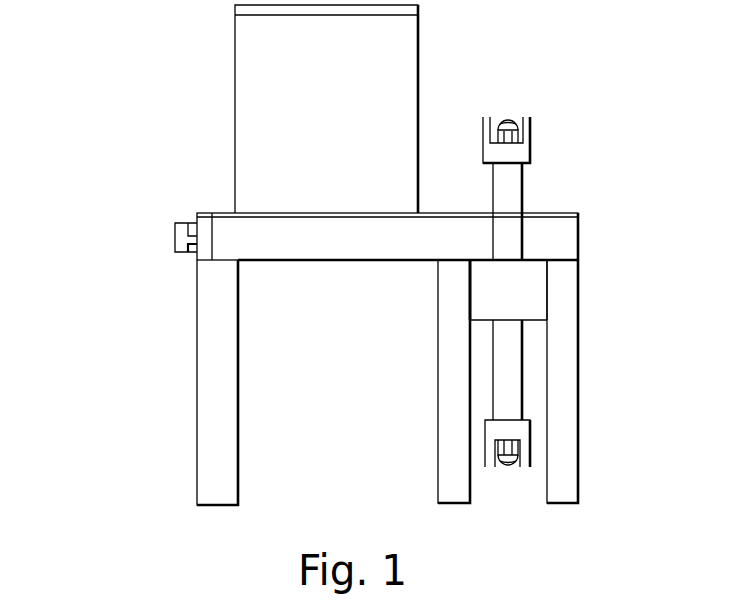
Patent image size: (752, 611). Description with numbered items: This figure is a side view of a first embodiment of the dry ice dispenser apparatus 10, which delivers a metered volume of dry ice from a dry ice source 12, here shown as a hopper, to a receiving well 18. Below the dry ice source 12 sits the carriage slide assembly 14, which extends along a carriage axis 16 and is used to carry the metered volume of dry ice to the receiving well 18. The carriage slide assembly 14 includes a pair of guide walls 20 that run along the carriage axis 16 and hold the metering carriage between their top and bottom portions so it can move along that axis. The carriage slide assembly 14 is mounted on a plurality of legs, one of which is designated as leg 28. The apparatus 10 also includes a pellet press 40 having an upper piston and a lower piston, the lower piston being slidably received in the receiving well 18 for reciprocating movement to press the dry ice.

The dry ice dispenser apparatus 10 is at (110, 107).
The dry ice source 12 is at (400, 87).
The carriage slide assembly 14 is at (312, 262).
The carriage axis 16 is at (582, 234).
The receiving well 18 is at (532, 268).
The guide walls 20 is at (223, 228).
The leg 28 is at (225, 360).
The pellet press 40 is at (538, 117).